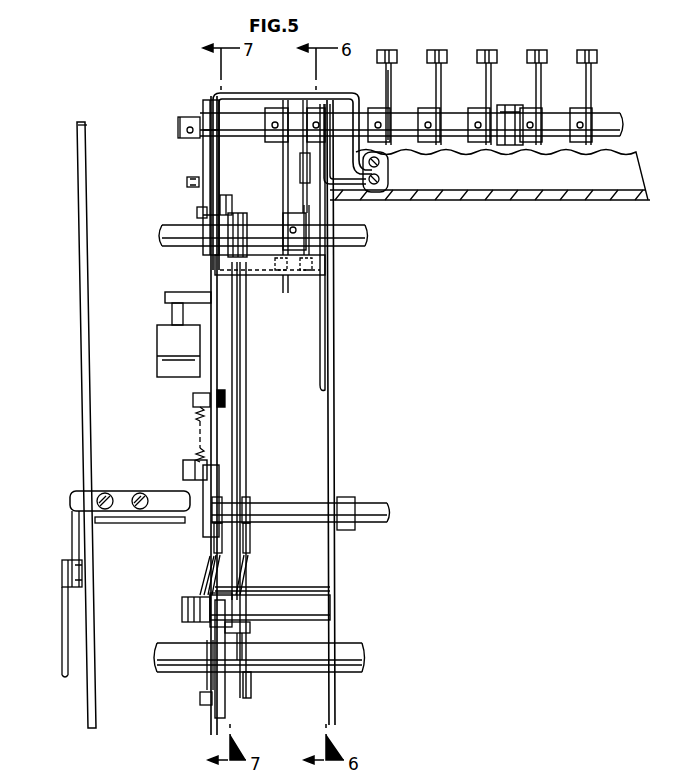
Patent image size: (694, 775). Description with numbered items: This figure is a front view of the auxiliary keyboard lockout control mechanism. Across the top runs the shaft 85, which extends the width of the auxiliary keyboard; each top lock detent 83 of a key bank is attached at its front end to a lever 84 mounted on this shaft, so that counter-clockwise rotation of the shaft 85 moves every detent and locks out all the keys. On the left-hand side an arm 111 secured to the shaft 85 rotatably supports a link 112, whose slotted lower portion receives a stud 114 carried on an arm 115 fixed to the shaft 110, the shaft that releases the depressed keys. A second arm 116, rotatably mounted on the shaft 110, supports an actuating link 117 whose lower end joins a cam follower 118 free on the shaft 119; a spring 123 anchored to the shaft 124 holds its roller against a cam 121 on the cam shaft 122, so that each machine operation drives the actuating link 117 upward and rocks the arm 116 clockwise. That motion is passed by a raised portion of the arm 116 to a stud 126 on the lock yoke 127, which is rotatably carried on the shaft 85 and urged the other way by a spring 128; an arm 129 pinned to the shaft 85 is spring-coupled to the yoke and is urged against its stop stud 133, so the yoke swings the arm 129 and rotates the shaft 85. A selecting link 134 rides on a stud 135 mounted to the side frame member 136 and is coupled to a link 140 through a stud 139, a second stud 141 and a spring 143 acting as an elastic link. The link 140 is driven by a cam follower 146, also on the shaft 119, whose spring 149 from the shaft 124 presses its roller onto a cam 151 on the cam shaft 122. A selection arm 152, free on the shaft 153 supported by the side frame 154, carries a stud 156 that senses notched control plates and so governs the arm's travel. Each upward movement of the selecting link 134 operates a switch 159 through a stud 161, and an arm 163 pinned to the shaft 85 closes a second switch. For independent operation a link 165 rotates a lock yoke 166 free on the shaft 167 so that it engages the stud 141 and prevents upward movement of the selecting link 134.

The top lock detent 83 is at (378, 52).
The lever 84 is at (390, 86).
The shaft 85 is at (604, 112).
The shaft 110 is at (360, 240).
The arm 111 is at (289, 125).
The link 112 is at (288, 190).
The stud 114 is at (278, 262).
The arm 115 is at (322, 250).
The second arm 116 is at (240, 214).
The actuating link 117 is at (246, 380).
The cam follower 118 is at (250, 650).
The shaft 119 is at (280, 590).
The cam 121 is at (252, 690).
The cam shaft 122 is at (358, 652).
The spring 123 is at (251, 538).
The shaft 124 is at (368, 505).
The stud 126 is at (232, 205).
The lock yoke 127 is at (214, 162).
The spring 128 is at (370, 196).
The arm 129 is at (199, 193).
The stop stud 133 is at (199, 213).
The selecting link 134 is at (235, 342).
The stud 135 is at (292, 285).
The side frame member 136 is at (322, 388).
The stud 139 is at (193, 400).
The link 140 is at (219, 493).
The second stud 141 is at (184, 470).
The spring 143 is at (196, 432).
The cam follower 146 is at (210, 572).
The spring 149 is at (214, 538).
The cam 151 is at (220, 718).
The selection arm 152 is at (208, 686).
The shaft 153 is at (322, 606).
The side frame 154 is at (336, 438).
The stud 156 is at (200, 700).
The switch 159 is at (162, 348).
The stud 161 is at (168, 293).
The arm 163 is at (95, 642).
The link 165 is at (62, 636).
The lock yoke 166 is at (72, 500).
The shaft 167 is at (152, 524).